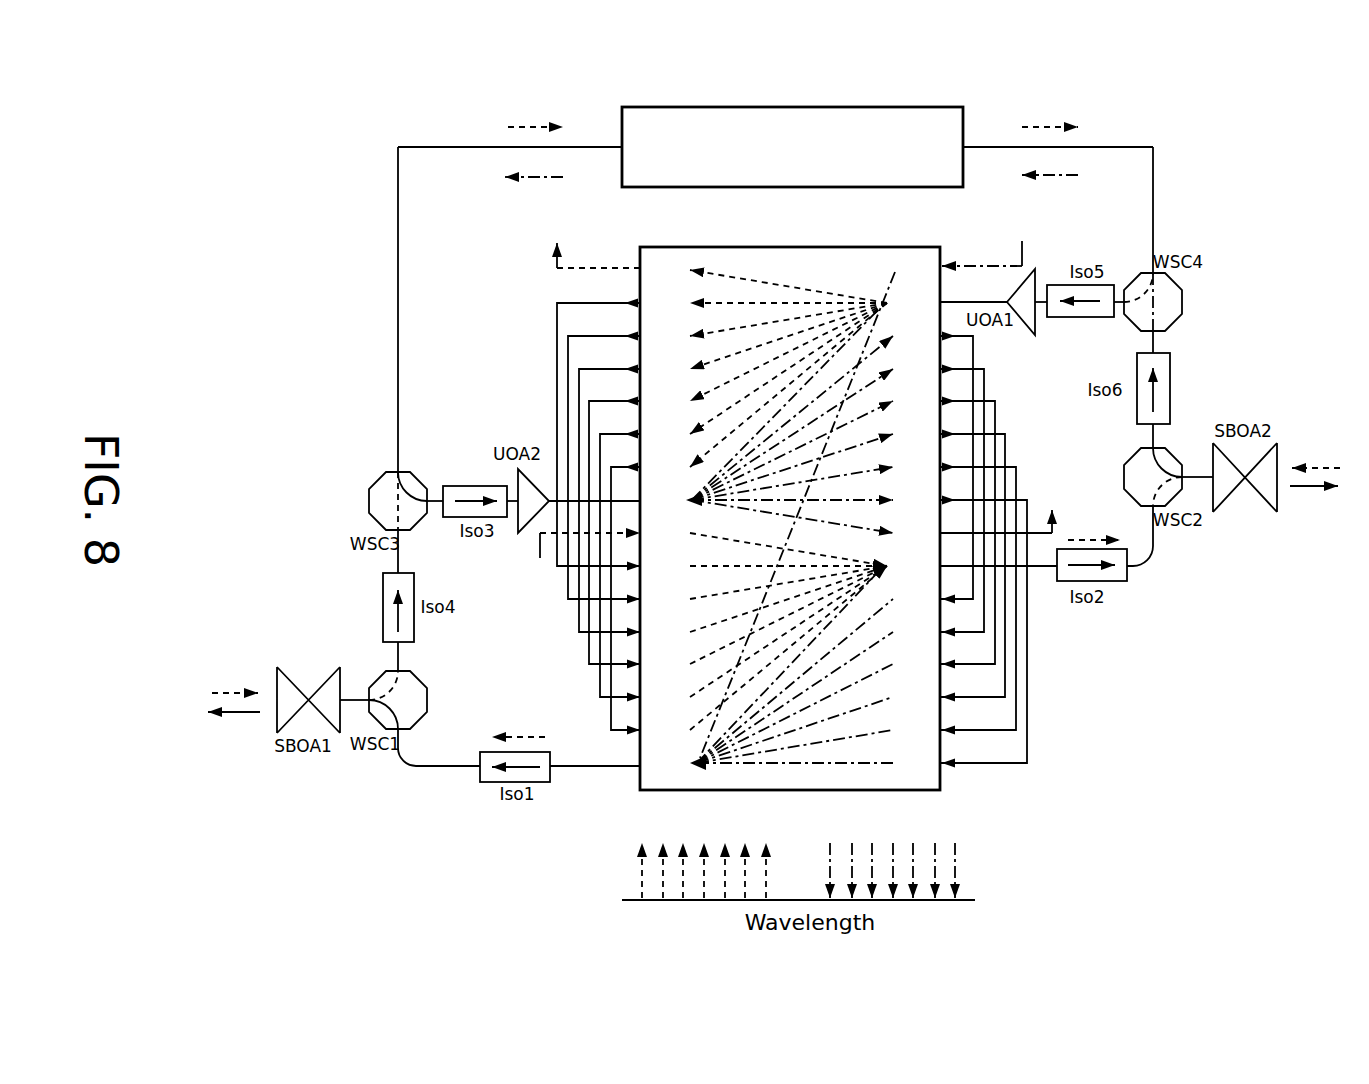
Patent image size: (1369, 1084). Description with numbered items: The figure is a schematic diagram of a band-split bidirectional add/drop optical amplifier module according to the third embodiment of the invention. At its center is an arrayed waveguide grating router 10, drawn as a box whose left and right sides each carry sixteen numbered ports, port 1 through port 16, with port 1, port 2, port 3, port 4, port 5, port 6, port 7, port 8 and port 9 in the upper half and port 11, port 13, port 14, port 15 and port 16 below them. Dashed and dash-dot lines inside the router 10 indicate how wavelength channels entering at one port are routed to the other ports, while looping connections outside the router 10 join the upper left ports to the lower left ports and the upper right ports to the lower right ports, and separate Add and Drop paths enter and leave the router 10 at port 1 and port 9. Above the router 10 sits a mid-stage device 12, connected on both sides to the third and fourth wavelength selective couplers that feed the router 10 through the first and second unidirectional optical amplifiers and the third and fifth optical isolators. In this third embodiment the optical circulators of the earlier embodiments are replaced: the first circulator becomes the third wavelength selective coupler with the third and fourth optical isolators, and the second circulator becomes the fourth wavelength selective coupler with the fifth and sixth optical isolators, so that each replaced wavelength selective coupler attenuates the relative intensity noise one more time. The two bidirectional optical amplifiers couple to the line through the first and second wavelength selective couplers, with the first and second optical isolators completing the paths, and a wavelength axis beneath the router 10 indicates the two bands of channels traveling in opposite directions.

The arrayed waveguide grating router 10 is at (790, 247).
The mid-stage device 12 is at (830, 107).
The switch port 1 is at (792, 250).
The switch port 2 is at (782, 430).
The switch port 3 is at (770, 463).
The switch port 4 is at (781, 496).
The switch port 5 is at (792, 528).
The switch port 6 is at (802, 561).
The switch port 7 is at (813, 594).
The switch port 8 is at (788, 627).
The switch port 9 is at (803, 535).
The switch port 11 is at (791, 599).
The switch port 13 is at (791, 664).
The switch port 14 is at (791, 697).
The switch port 15 is at (791, 730).
The switch port 16 is at (752, 763).